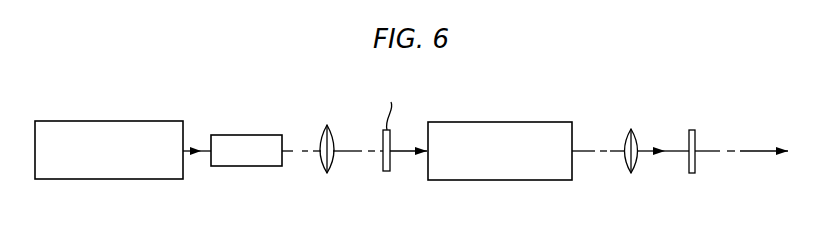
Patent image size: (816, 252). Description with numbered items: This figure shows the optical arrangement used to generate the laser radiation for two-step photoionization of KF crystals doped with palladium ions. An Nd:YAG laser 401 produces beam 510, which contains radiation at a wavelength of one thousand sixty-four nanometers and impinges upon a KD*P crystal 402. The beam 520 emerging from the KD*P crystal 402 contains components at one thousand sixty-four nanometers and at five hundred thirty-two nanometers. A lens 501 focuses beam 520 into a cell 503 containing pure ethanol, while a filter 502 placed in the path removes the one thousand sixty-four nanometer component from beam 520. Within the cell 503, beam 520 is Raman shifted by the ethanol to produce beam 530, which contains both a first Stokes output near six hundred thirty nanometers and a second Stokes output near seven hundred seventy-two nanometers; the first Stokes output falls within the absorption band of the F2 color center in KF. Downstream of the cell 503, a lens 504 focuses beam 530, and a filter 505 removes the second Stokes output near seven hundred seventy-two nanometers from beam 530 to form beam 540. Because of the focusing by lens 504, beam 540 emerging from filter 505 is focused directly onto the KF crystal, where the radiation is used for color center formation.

The Nd:YAG laser 401 is at (110, 179).
The KD*P crystal 402 is at (250, 166).
The lens 501 is at (327, 173).
The filter 502 is at (386, 171).
The cell 503 is at (493, 180).
The lens 504 is at (631, 173).
The filter 505 is at (692, 173).
The beam 510 is at (203, 151).
The beam 520 is at (291, 151).
The beam 530 is at (590, 151).
The beam 540 is at (749, 151).